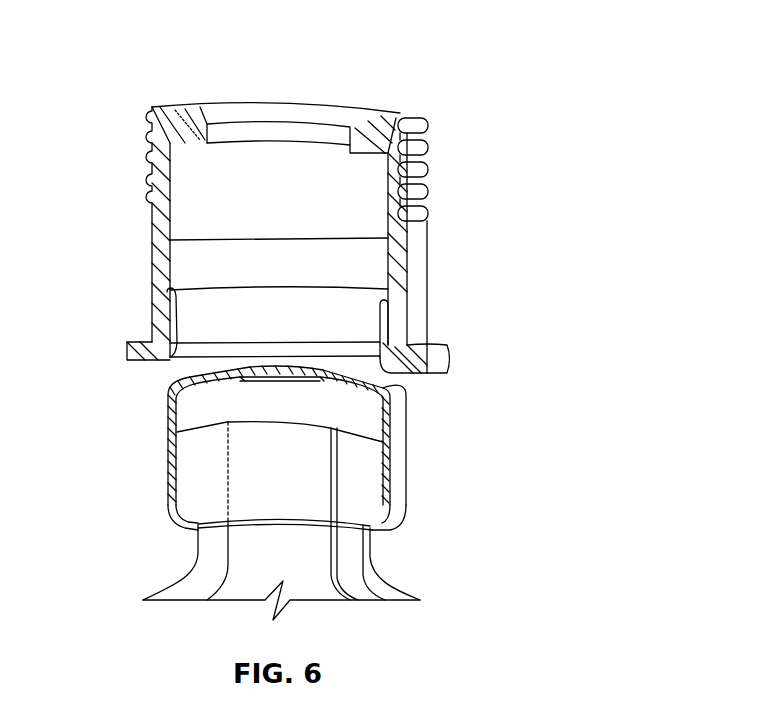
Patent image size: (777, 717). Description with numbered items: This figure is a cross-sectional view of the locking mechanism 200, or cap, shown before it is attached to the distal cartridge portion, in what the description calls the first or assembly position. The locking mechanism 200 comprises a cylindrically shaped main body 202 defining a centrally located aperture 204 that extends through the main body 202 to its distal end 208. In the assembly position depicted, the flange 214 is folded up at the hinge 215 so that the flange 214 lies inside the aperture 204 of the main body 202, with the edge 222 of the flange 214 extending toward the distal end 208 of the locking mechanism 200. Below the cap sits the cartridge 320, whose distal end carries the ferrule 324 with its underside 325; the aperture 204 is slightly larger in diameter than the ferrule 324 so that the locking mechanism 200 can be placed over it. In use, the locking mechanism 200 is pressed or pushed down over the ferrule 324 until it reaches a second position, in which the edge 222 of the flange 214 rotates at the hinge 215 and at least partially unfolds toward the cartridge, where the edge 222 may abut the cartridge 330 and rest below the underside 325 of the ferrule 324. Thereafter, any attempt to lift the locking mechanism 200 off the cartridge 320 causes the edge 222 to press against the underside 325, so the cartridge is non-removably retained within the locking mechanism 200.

The locking mechanism 200 is at (549, 56).
The main body 202 is at (157, 212).
The aperture 204 is at (182, 258).
The distal end 208 is at (399, 114).
The flange 214 is at (405, 346).
The hinge 215 is at (168, 360).
The edge 222 is at (402, 302).
The cartridge 320 is at (150, 556).
The ferrule 324 is at (398, 488).
The underside 325 is at (380, 535).
The cartridge 330 is at (375, 575).